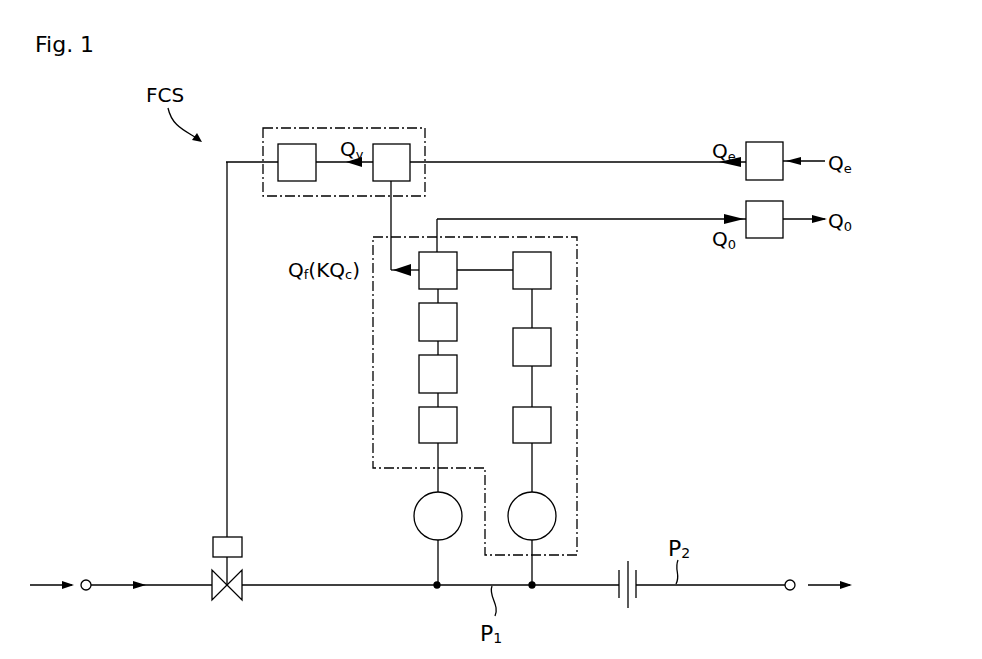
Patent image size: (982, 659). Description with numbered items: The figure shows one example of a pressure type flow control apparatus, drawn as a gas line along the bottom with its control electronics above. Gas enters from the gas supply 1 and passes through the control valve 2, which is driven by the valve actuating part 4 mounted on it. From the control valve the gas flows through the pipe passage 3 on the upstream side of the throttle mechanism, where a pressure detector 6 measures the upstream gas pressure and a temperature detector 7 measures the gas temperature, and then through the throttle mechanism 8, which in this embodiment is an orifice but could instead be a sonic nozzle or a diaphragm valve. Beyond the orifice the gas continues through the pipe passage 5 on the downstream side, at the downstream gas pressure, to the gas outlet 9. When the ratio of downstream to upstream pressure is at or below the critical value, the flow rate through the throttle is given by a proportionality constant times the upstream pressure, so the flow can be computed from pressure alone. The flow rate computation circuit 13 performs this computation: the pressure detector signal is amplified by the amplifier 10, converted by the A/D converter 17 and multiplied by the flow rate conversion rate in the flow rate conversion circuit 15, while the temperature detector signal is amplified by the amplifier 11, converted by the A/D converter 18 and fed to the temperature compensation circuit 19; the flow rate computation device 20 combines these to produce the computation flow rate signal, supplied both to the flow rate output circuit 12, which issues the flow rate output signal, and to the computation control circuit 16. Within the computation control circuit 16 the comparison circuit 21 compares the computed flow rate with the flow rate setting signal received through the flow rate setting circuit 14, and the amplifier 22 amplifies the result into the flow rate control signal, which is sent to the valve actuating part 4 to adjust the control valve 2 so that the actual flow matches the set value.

The gas supply 1 is at (86, 580).
The control valve 2 is at (233, 601).
The pipe passage on the upstream side of the throttle mechanism 3 is at (340, 586).
The valve actuating part 4 is at (213, 546).
The pipe passage on the downstream side of the throttle mechanism 5 is at (710, 586).
The pressure detector 6 is at (414, 516).
The temperature detector 7 is at (556, 516).
The throttle mechanism 8 is at (615, 600).
The gas outlet 9 is at (789, 591).
The amplifier 10 is at (419, 425).
The amplifier 11 is at (551, 425).
The flow rate output circuit 12 is at (764, 238).
The flow rate computation circuit 13 is at (577, 460).
The flow rate setting circuit 14 is at (762, 142).
The flow rate conversion circuit 15 is at (419, 375).
The computation control circuit 16 is at (337, 128).
The A/D converter 17 is at (419, 322).
The A/D converter 18 is at (551, 346).
The temperature compensation circuit 19 is at (551, 270).
The flow rate computation device 20 is at (447, 252).
The comparison circuit 21 is at (391, 144).
The amplifier 22 is at (296, 144).